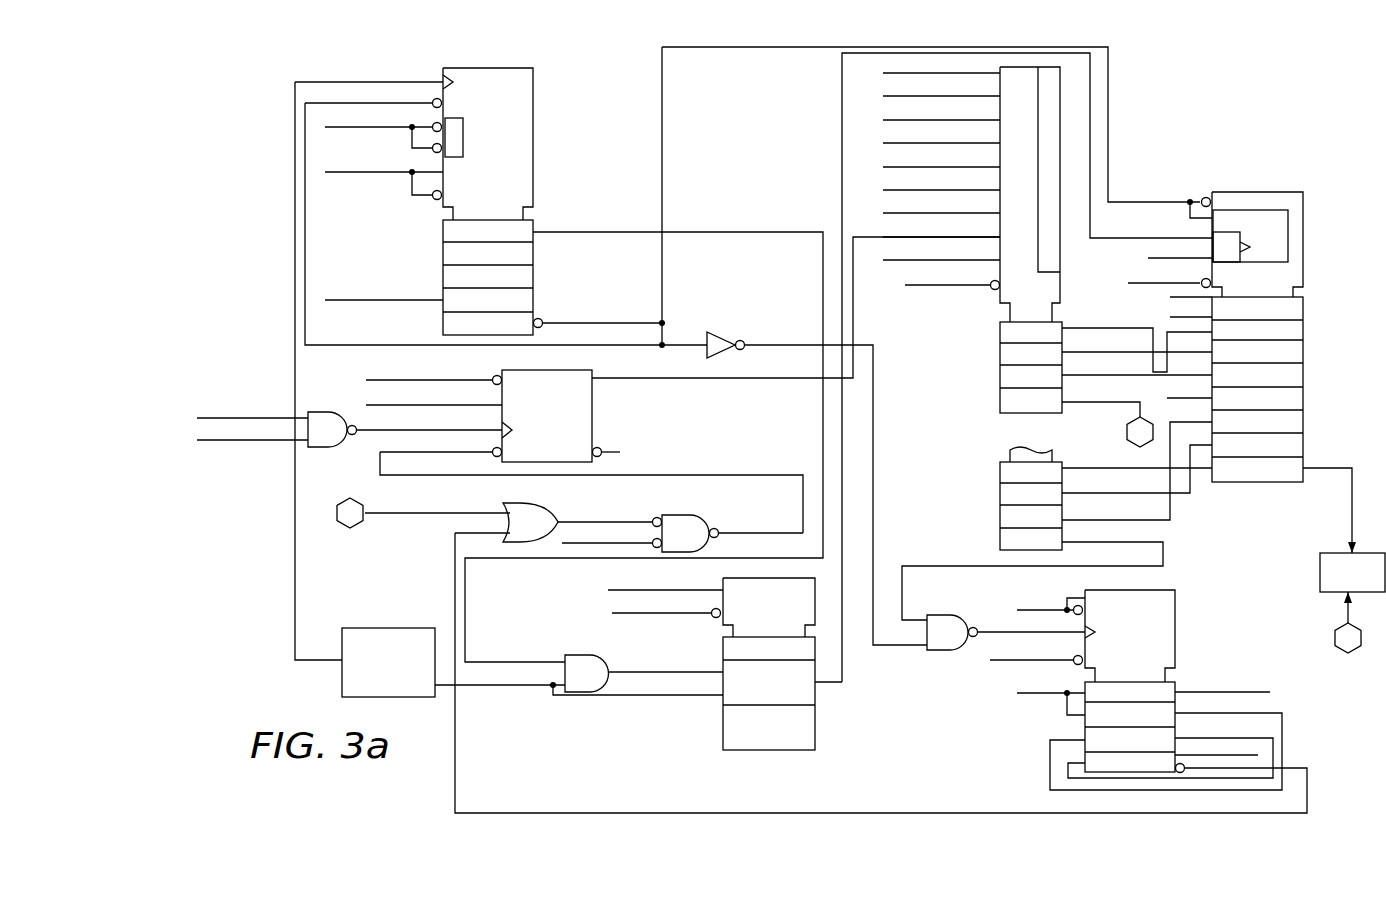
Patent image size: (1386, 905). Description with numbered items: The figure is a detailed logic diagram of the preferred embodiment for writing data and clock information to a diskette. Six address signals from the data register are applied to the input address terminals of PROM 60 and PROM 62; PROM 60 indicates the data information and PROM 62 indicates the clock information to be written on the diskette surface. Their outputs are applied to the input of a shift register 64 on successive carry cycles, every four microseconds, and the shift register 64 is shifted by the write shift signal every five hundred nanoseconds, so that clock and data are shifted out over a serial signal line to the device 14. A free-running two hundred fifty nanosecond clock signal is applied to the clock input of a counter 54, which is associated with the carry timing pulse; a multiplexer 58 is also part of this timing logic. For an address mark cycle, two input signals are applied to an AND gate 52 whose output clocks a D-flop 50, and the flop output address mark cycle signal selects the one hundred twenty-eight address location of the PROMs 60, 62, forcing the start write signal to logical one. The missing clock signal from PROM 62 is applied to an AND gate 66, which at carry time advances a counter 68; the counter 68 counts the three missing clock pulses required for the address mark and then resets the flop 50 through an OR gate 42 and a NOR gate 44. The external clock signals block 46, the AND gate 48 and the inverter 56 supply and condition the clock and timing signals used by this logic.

The device 14 is at (1328, 552).
The OR gate 42 is at (520, 504).
The NOR gate 44 is at (690, 513).
The external clock signals 46 is at (395, 628).
The AND gate 48 is at (585, 655).
The D-flop 50 is at (592, 418).
The AND gate 52 is at (345, 410).
The counter 54 is at (533, 142).
The inverter 56 is at (720, 337).
The multiplexer 58 is at (815, 727).
The PROM 60 is at (1000, 303).
The PROM 62 is at (1000, 527).
The shift register 64 is at (1303, 312).
The AND gate 66 is at (945, 614).
The counter 68 is at (1178, 620).